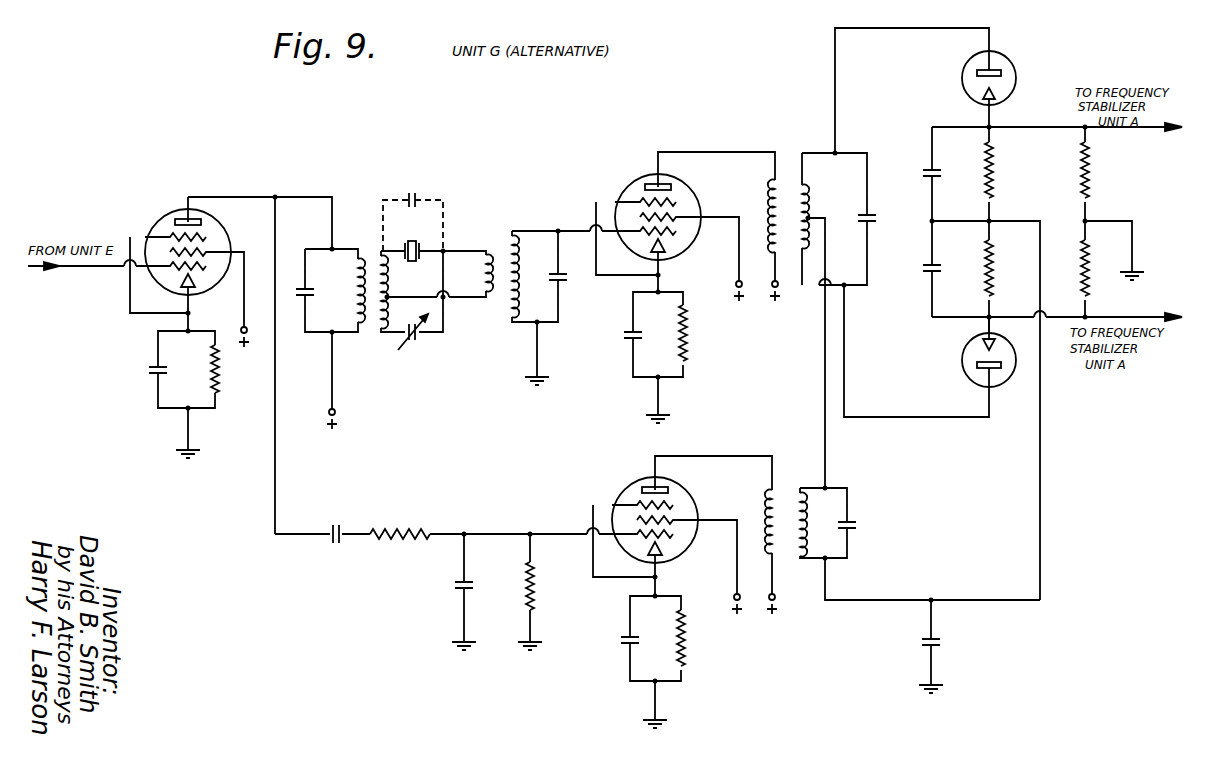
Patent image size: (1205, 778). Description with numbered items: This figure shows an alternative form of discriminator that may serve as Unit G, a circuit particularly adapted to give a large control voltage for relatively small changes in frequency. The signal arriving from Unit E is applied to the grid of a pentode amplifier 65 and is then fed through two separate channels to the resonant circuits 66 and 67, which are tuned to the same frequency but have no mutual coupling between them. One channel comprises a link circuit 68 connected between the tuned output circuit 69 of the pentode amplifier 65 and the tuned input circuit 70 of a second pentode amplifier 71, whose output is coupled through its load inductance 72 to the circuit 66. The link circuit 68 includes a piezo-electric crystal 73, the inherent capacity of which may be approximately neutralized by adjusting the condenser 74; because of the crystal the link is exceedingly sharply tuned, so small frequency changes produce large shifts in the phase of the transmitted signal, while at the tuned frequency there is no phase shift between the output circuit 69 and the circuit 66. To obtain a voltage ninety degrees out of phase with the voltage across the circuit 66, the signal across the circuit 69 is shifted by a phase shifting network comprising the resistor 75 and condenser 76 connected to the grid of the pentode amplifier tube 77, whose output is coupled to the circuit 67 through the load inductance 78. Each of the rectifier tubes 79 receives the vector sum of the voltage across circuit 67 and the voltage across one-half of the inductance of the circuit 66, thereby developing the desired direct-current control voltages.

The pentode amplifier 65 is at (190, 219).
The resonant circuit 66 is at (839, 320).
The resonant circuit 67 is at (828, 523).
The link circuit 68 is at (437, 284).
The tuned output circuit 69 is at (330, 291).
The tuned input circuit 70 is at (539, 307).
The pentode amplifier 71 is at (656, 186).
The load inductance 72 is at (776, 222).
The piezo-electric crystal 73 is at (413, 238).
The condenser 74 is at (403, 376).
The resistor 75 is at (398, 526).
The condenser 76 is at (452, 592).
The pentode amplifier tube 77 is at (632, 492).
The load inductance 78 is at (774, 522).
The rectifier tubes 79 is at (968, 92).